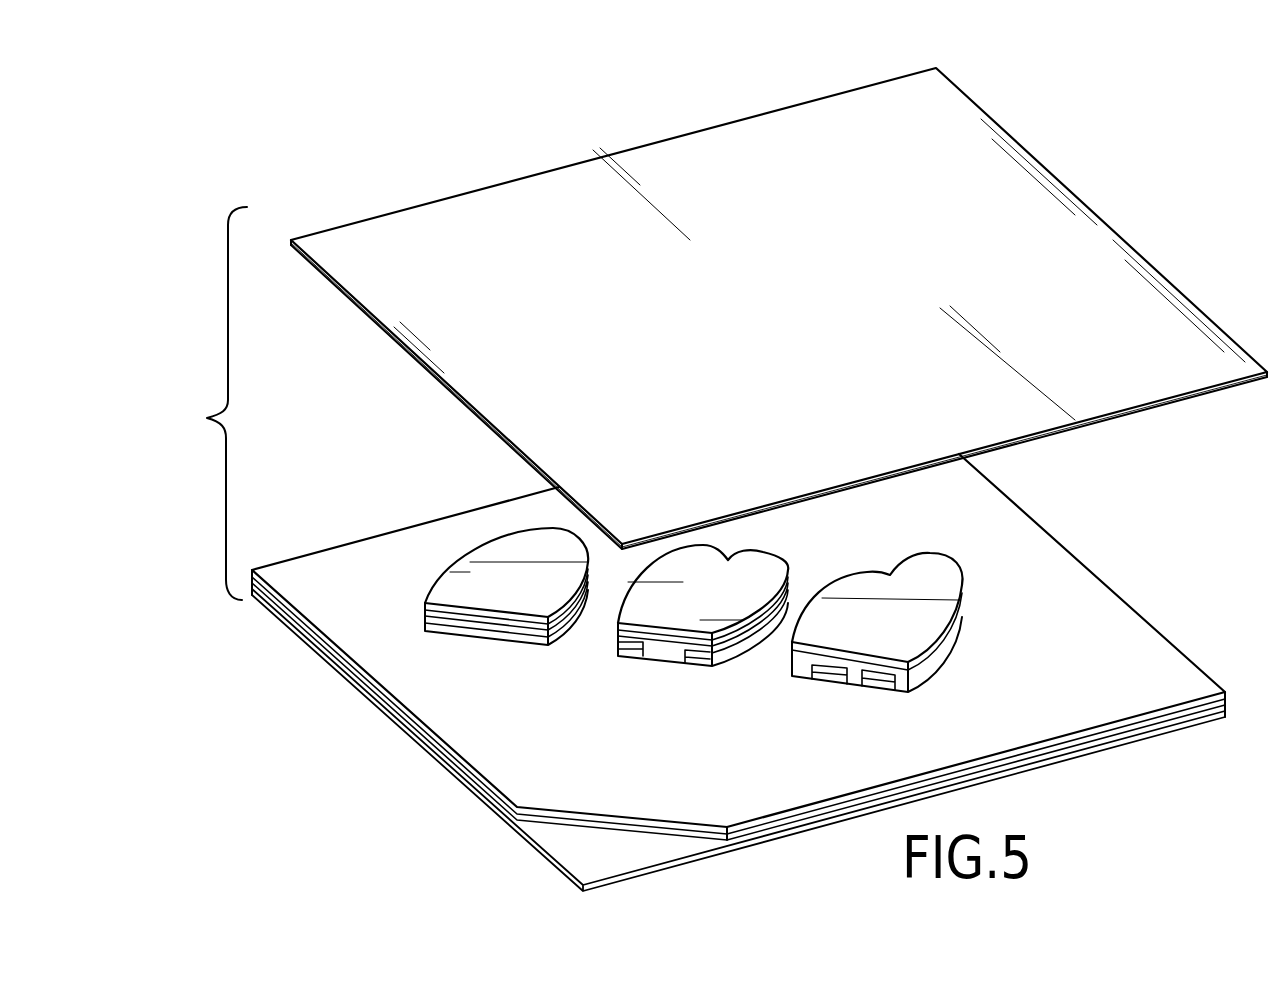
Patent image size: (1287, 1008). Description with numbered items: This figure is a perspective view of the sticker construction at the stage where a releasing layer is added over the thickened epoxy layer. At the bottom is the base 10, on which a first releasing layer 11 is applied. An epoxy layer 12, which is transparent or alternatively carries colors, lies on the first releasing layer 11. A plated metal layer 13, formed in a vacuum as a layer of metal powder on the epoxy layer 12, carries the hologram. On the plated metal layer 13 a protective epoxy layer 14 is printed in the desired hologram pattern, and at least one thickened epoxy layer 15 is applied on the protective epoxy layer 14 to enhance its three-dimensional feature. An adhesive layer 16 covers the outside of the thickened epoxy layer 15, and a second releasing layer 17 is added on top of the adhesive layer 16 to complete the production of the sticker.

The base 10 is at (653, 866).
The first releasing layer 11 is at (447, 755).
The epoxy layer 12 is at (430, 732).
The plated metal layer 13 is at (481, 638).
The protective epoxy layer 14 is at (423, 623).
The thickened epoxy layer 15 is at (423, 612).
The adhesive layer 16 is at (425, 603).
The second releasing layer 17 is at (1130, 407).